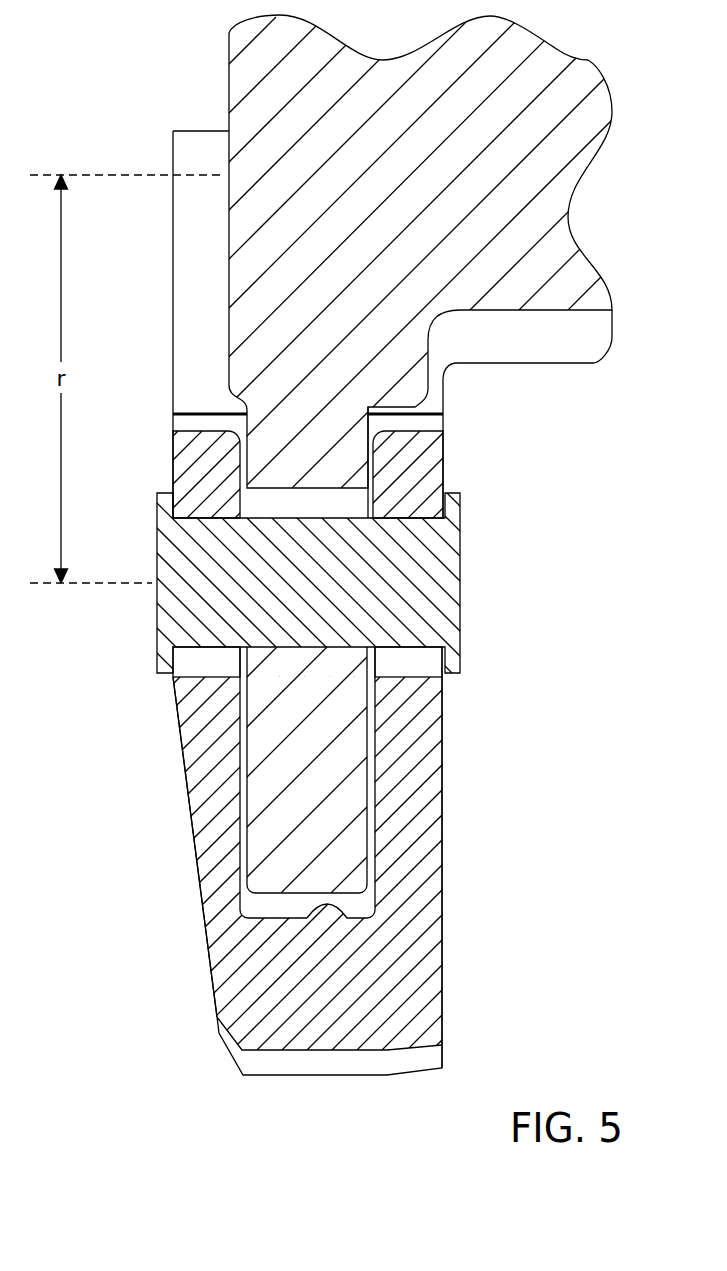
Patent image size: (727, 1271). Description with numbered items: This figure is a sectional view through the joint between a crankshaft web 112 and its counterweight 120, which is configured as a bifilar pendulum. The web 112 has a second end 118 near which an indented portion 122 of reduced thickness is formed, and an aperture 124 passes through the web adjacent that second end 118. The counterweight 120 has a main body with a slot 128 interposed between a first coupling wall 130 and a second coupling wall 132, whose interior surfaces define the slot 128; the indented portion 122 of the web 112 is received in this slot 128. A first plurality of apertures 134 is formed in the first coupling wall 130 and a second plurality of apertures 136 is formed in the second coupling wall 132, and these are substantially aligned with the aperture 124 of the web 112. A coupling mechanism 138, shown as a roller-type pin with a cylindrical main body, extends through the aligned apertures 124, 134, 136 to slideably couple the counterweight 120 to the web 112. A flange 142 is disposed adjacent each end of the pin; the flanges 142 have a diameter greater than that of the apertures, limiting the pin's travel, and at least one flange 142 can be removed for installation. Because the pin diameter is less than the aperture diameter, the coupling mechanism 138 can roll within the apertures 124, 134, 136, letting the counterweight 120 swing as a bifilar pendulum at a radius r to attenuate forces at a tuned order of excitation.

The web 112 is at (216, 270).
The second end 118 is at (290, 893).
The counterweight 120 is at (195, 793).
The indented portion 122 is at (355, 783).
The aperture 124 is at (362, 496).
The slot 128 is at (340, 903).
The first coupling wall 130 is at (172, 694).
The second coupling wall 132 is at (442, 697).
The first plurality of apertures 134 is at (190, 660).
The second plurality of apertures 136 is at (430, 667).
The coupling mechanism 138 is at (475, 583).
The flange 142 is at (162, 492).